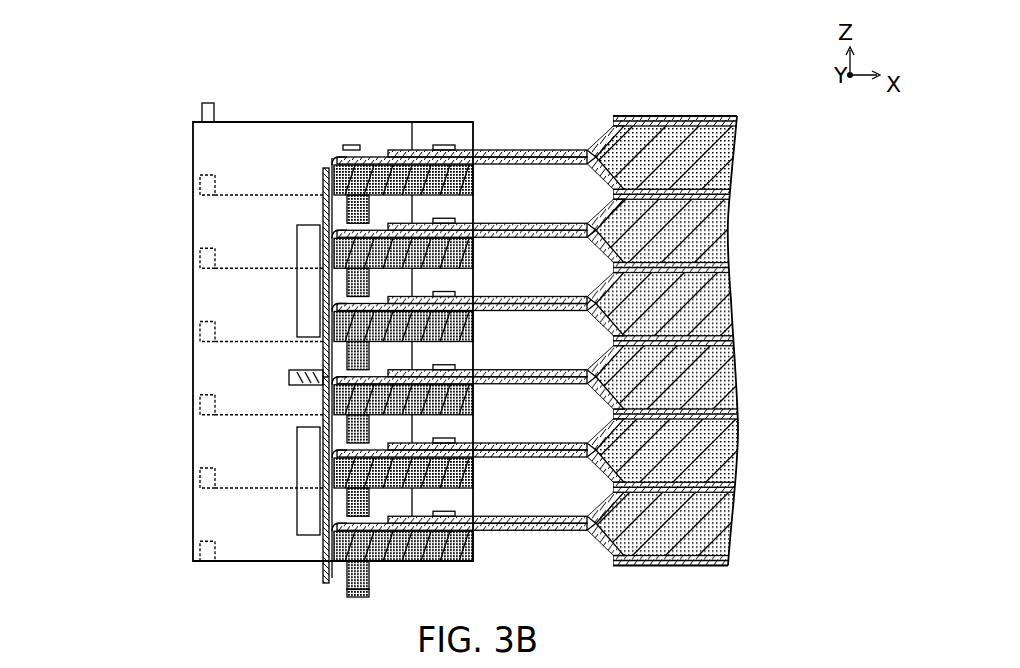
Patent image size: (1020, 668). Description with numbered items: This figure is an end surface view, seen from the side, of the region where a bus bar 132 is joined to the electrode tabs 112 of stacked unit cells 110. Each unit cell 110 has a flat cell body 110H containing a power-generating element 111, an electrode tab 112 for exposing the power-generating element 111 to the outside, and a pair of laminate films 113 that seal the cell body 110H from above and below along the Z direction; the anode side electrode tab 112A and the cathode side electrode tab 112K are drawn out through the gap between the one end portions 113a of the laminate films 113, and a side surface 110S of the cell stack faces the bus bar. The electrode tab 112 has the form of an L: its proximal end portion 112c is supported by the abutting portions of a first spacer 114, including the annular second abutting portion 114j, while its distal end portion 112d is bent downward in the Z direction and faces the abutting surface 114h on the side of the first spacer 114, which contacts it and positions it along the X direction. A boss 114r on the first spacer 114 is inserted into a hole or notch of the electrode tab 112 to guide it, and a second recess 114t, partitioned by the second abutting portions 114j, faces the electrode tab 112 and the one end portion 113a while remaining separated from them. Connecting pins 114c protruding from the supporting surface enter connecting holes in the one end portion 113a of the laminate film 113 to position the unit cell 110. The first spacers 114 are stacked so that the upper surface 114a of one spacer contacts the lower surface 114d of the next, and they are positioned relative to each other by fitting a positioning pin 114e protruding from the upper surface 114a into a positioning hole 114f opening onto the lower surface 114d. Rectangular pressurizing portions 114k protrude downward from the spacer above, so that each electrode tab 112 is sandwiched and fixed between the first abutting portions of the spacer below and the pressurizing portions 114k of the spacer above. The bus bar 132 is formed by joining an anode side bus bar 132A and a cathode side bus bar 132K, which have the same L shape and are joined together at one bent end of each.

The unit cell 110 is at (672, 117).
The side surface of actuator 110S is at (613, 90).
The cell body 110H is at (812, 150).
The power-generating element 111 is at (736, 151).
The electrode tab 112 is at (836, 243).
The anode side electrode tab 112A is at (557, 443).
The cathode side electrode tab 112K is at (557, 223).
The proximal end portion 112c is at (378, 157).
The distal end portion 112d is at (323, 190).
The laminate film 113 is at (737, 119).
The one end portion of laminate film 113a is at (400, 150).
The first spacer 114 is at (193, 170).
The upper surface 114a is at (277, 122).
The connecting pin 114c is at (445, 145).
The lower surface 114d is at (273, 196).
The positioning pin 114e is at (202, 110).
The positioning hole 114f is at (199, 183).
The abutting surface 114h is at (348, 251).
The second abutting portion 114j is at (472, 150).
The pressurizing portion 114k is at (347, 204).
The boss 114r is at (350, 145).
The second recess 114t is at (462, 150).
The bus bar 132 is at (122, 519).
The anode side bus bar 132A is at (300, 428).
The cathode side bus bar 132K is at (305, 338).